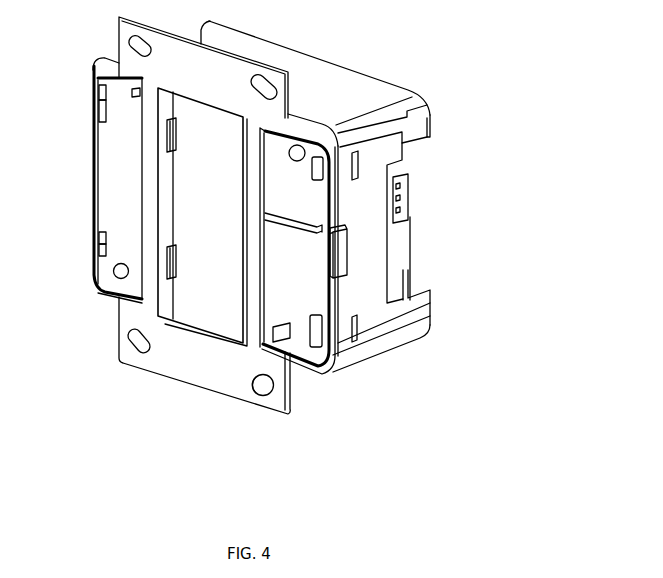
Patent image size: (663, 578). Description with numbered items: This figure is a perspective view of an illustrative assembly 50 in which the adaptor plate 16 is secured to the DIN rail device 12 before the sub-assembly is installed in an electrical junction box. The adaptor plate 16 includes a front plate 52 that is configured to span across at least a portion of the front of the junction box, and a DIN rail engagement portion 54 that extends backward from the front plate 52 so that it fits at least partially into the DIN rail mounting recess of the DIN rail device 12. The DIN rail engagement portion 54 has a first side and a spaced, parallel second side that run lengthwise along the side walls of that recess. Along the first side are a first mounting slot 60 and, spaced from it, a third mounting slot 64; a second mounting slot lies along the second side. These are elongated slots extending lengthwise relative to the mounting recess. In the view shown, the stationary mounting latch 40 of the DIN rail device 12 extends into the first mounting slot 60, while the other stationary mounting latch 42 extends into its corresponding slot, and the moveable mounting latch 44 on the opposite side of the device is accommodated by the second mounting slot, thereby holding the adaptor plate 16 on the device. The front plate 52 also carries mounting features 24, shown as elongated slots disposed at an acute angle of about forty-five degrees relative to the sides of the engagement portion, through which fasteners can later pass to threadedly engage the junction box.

The DIN rail device 12 is at (252, 197).
The adaptor plate 16 is at (181, 225).
The mounting features 24 is at (128, 43).
The stationary mounting latch 40 is at (168, 150).
The stationary mounting latch 42 is at (140, 290).
The moveable mounting latch 44 is at (293, 242).
The assembly 50 is at (281, 225).
The front plate 52 is at (236, 93).
The DIN rail engagement portion 54 is at (208, 312).
The first mounting slot 60 is at (168, 124).
The third mounting slot 64 is at (168, 257).